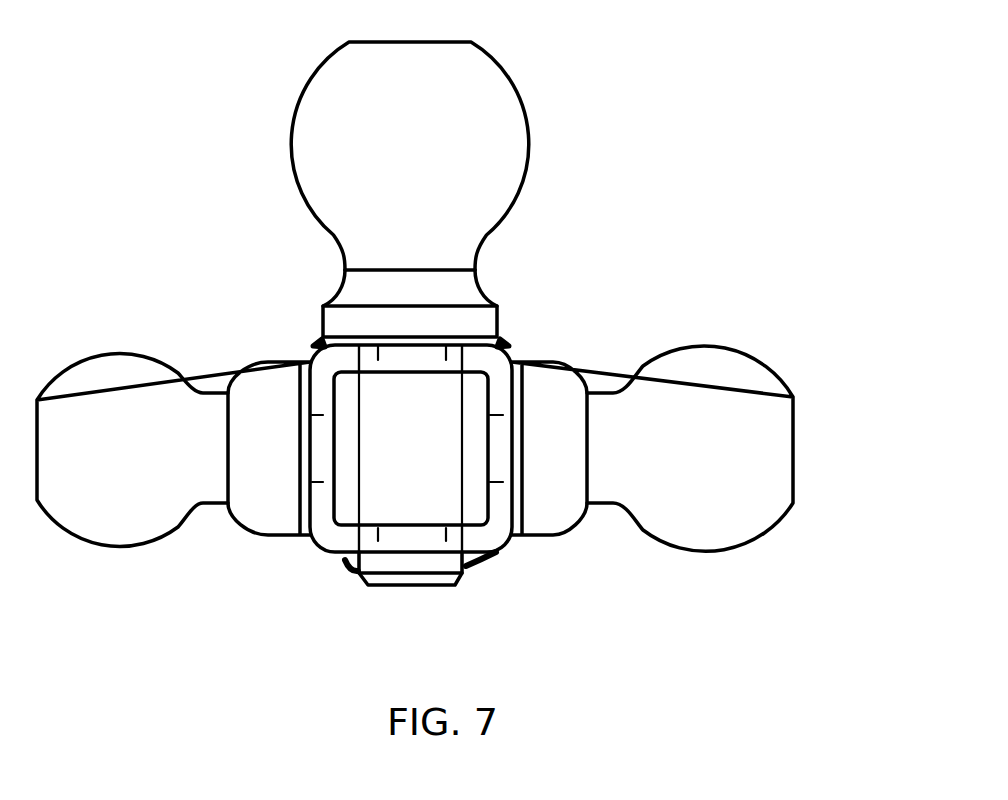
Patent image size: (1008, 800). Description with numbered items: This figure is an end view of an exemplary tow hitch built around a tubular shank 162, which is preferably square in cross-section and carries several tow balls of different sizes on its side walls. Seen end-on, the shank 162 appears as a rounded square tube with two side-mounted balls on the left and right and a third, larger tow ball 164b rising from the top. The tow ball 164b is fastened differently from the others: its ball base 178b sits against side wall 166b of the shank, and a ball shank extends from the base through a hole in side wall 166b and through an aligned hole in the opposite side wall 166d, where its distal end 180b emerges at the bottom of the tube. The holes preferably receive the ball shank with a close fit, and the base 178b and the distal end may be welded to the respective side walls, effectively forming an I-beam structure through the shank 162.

The tubular shank 162 is at (323, 552).
The tow ball 164b is at (513, 81).
The side wall 166b is at (405, 358).
The side wall 166d is at (403, 539).
The ball base 178b is at (500, 312).
The lower retainer flange 180b is at (422, 589).